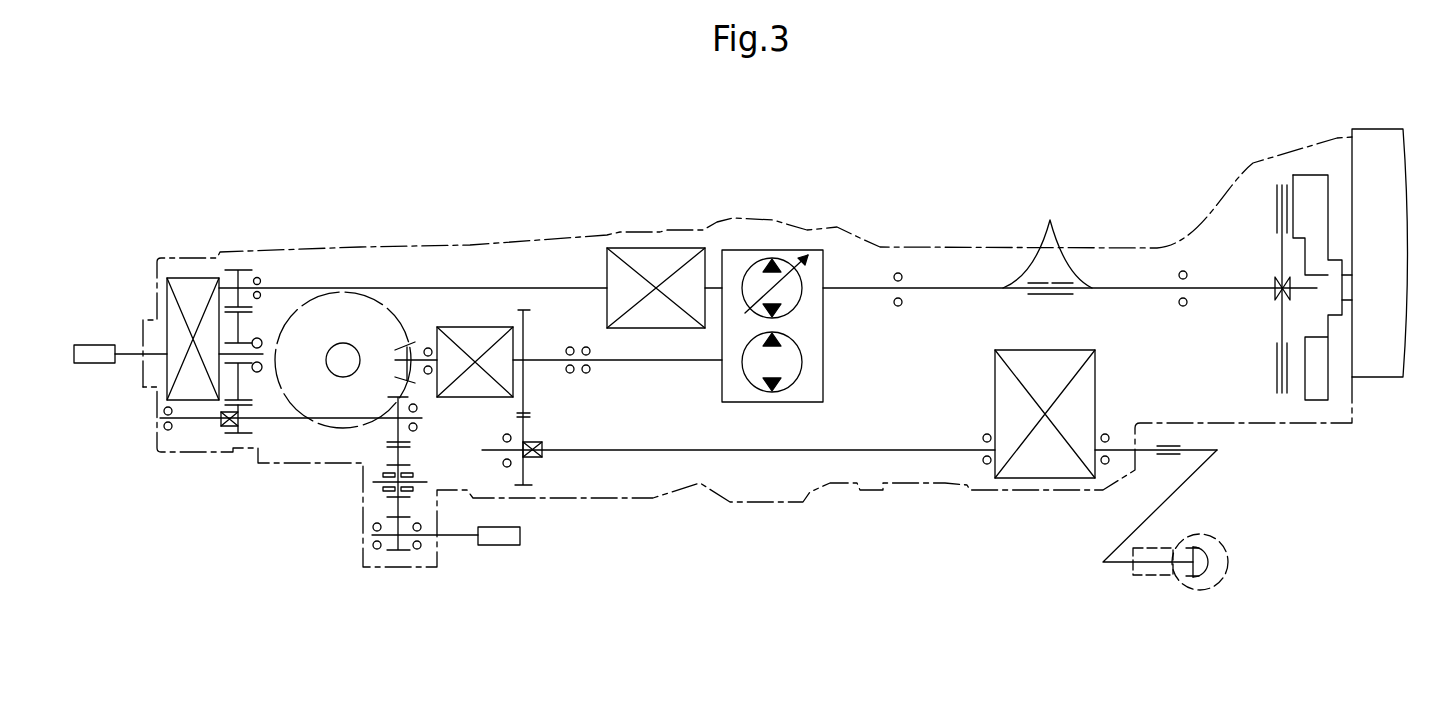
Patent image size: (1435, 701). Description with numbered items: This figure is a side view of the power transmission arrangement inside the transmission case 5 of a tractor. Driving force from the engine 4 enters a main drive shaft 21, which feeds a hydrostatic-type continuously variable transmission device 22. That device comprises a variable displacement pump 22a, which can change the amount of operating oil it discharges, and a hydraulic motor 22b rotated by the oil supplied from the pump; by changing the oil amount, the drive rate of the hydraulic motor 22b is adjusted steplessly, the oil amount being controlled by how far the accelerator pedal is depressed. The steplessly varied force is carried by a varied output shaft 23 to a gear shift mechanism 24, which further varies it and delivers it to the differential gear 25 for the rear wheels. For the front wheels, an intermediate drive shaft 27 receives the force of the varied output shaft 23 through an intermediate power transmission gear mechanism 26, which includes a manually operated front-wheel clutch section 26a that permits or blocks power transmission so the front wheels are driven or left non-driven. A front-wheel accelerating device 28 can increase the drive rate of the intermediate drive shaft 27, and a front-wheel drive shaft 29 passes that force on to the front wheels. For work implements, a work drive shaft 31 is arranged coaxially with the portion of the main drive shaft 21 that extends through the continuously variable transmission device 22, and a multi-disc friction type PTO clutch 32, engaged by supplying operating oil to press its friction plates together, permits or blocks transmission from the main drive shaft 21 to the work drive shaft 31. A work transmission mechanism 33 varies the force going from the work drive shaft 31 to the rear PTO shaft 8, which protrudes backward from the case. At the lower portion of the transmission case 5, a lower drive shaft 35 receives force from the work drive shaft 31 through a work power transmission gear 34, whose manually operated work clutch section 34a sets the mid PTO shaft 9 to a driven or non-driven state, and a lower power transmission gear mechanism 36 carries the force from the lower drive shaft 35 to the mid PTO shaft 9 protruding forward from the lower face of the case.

The engine 4 is at (1377, 129).
The transmission case 5 is at (900, 247).
The rear power take-off (PTO) shaft 8 is at (93, 364).
The mid PTO shaft 9 is at (500, 545).
The main drive shaft 21 is at (1050, 221).
The hydrostatic-type continuously variable transmission device 22 is at (811, 288).
The variable displacement pump 22a is at (802, 307).
The hydraulic motor 22b is at (803, 362).
The varied output shaft 23 is at (678, 362).
The gear shift mechanism 24 is at (473, 397).
The differential gear 25 is at (390, 300).
The intermediate power transmission gear mechanism 26 is at (535, 418).
The front-wheel clutch section 26a is at (534, 457).
The intermediate drive shaft 27 is at (723, 452).
The front-wheel accelerating device 28 is at (1095, 387).
The front-wheel drive shaft 29 is at (1180, 492).
The work drive shaft 31 is at (477, 288).
The PTO clutch 32 is at (658, 248).
The work transmission mechanism 33 is at (167, 307).
The work power transmission gear 34 is at (240, 270).
The work clutch section 34a is at (220, 426).
The lower drive shaft 35 is at (298, 420).
The lower power transmission gear mechanism 36 is at (380, 503).